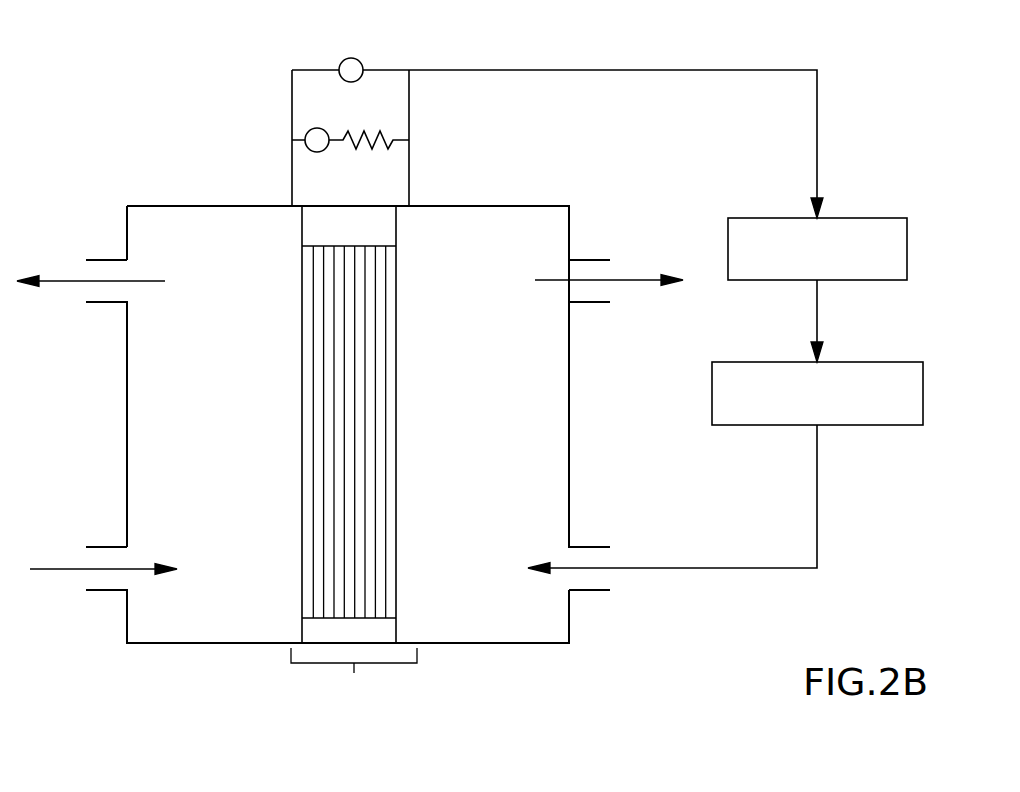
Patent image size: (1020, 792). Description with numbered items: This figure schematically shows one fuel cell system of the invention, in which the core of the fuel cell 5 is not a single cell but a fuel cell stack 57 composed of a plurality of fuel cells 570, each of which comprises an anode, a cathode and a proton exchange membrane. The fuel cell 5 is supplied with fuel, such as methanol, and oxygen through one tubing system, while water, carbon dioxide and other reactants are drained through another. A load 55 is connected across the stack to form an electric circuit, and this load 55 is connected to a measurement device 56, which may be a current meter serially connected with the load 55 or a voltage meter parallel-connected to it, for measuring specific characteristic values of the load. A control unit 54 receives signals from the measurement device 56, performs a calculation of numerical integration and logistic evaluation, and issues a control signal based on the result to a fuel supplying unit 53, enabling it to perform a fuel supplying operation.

The fuel cell 5 is at (134, 186).
The fuel supplying unit 53 is at (793, 362).
The control unit 54 is at (757, 218).
The load 55 is at (375, 135).
The measurement device 56 is at (343, 62).
The fuel cell stack 57 is at (354, 673).
The fuel cells 570 is at (387, 608).